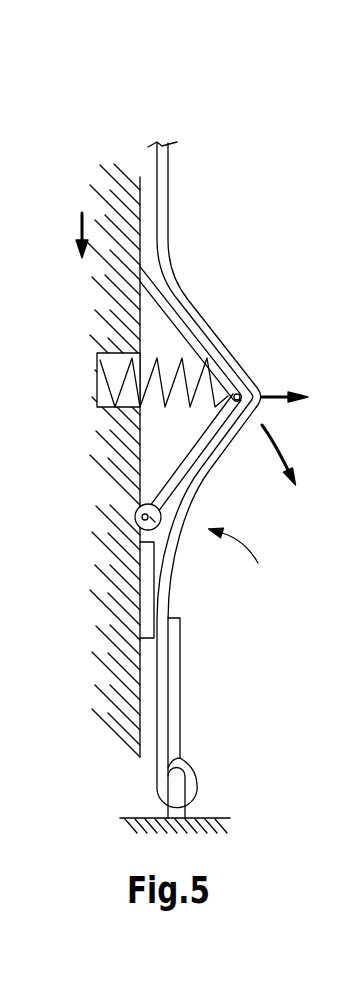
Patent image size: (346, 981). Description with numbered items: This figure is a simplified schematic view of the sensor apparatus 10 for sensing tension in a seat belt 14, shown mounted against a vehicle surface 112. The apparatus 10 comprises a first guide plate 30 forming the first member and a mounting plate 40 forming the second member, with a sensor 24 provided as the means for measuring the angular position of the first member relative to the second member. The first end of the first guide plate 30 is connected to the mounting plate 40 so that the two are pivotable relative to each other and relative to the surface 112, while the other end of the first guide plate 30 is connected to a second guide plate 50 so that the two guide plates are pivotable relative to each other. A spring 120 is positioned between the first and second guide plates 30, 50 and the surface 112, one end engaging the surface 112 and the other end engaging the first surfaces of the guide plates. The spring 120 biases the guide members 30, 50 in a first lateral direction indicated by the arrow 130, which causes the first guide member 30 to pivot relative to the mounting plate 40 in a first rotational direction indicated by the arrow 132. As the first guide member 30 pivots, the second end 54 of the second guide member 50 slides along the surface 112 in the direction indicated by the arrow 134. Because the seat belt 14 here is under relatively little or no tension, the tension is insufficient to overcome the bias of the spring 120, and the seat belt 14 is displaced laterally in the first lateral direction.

The sensor apparatus 10 is at (247, 559).
The seat belt 14 is at (165, 185).
The sensor 24 is at (138, 506).
The first guide plate 30 is at (185, 462).
The mounting plate 40 is at (145, 583).
The second guide plate 50 is at (188, 328).
The second end of second guide plate 54 is at (145, 263).
The vehicle surface 112 is at (142, 200).
The spring 120 is at (143, 362).
The arrow indicating first lateral direction 130 is at (277, 397).
The arrow indicating first rotational direction 132 is at (275, 443).
The arrow indicating sliding direction 134 is at (80, 222).